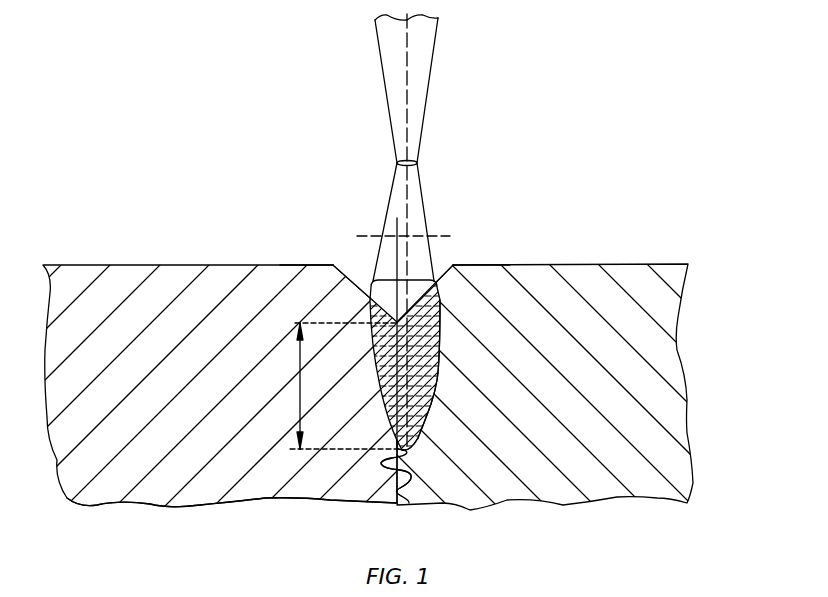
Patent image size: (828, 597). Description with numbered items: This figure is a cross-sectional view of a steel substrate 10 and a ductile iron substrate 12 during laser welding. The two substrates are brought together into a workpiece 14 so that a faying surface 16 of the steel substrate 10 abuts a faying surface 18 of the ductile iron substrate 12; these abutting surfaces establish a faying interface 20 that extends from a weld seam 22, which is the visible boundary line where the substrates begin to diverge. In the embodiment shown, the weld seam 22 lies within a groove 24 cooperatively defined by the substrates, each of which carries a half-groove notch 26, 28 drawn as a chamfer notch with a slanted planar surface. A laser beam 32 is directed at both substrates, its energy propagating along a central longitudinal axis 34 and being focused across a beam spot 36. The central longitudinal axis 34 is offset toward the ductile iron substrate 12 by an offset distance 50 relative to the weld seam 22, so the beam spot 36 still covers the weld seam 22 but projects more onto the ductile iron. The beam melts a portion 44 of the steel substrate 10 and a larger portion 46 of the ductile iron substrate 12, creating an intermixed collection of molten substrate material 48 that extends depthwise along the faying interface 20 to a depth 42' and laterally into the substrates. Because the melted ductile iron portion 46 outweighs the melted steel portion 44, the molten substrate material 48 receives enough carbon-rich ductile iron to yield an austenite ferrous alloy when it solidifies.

The steel substrate 10 is at (150, 414).
The ductile iron substrate 12 is at (580, 405).
The workpiece 14 is at (234, 524).
The faying surface of the steel substrate 16 is at (402, 507).
The faying surface of the ductile iron substrate 18 is at (399, 465).
The faying interface 20 is at (382, 482).
The weld seam 22 is at (397, 322).
The groove 24 is at (355, 262).
The notch of the steel substrate 26 is at (340, 265).
The notch of the ductile iron substrate 28 is at (453, 263).
The laser beam 32 is at (433, 62).
The central longitudinal axis 34 is at (403, 89).
The beam spot 36 is at (403, 280).
The depth 42' is at (321, 386).
The melted portion of the steel substrate 44 is at (379, 372).
The melted portion of the ductile iron substrate 46 is at (437, 366).
The molten substrate material 48 is at (423, 406).
The offset distance 50 is at (403, 235).